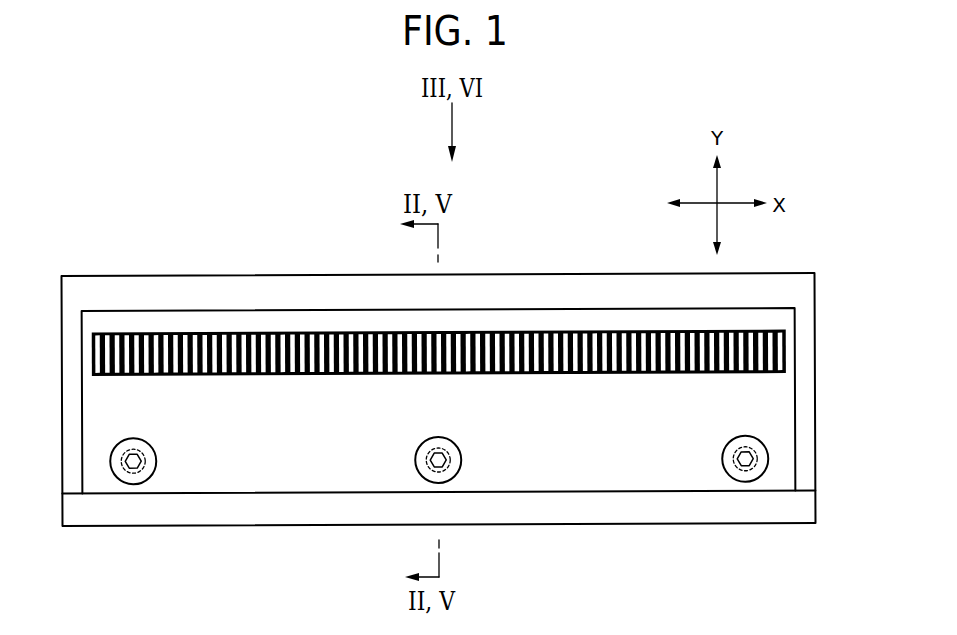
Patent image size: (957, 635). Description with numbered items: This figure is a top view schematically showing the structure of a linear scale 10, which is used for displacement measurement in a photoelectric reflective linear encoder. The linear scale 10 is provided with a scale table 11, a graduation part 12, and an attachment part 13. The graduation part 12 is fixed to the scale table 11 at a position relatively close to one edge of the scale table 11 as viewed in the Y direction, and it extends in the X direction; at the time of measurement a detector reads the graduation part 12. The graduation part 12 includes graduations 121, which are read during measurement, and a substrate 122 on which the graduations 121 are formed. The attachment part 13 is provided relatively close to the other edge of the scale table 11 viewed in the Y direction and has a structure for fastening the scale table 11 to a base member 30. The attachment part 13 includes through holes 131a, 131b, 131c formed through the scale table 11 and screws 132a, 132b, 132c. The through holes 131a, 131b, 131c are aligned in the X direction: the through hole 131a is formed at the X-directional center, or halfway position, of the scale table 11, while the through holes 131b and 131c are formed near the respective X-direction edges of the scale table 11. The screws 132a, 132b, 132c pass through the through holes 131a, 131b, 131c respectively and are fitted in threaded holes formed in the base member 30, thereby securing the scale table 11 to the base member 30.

The linear scale 10 is at (438, 356).
The scale table 11 is at (546, 281).
The graduation part 12 is at (498, 332).
The graduations 121 is at (786, 358).
The substrate 122 is at (786, 338).
The attachment part 13 is at (777, 432).
The through hole 131a is at (450, 470).
The through hole 131b is at (141, 470).
The through hole 131c is at (752, 470).
The screw 132a is at (428, 473).
The screw 132b is at (124, 465).
The screw 132c is at (735, 471).
The base member 30 is at (808, 428).